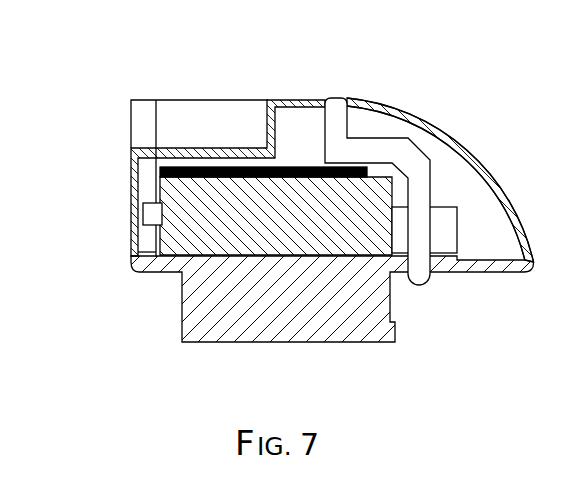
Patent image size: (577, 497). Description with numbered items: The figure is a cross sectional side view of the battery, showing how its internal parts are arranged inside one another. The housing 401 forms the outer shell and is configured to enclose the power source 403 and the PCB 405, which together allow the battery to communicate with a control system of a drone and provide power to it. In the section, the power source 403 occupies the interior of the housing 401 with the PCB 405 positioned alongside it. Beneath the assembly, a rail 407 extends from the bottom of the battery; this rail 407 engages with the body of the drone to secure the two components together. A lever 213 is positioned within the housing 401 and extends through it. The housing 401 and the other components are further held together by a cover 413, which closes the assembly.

The housing 401 is at (457, 143).
The lever 213 is at (358, 138).
The PCB 405 is at (283, 168).
The cover 413 is at (157, 132).
The power source 403 is at (143, 245).
The rail 407 is at (395, 337).